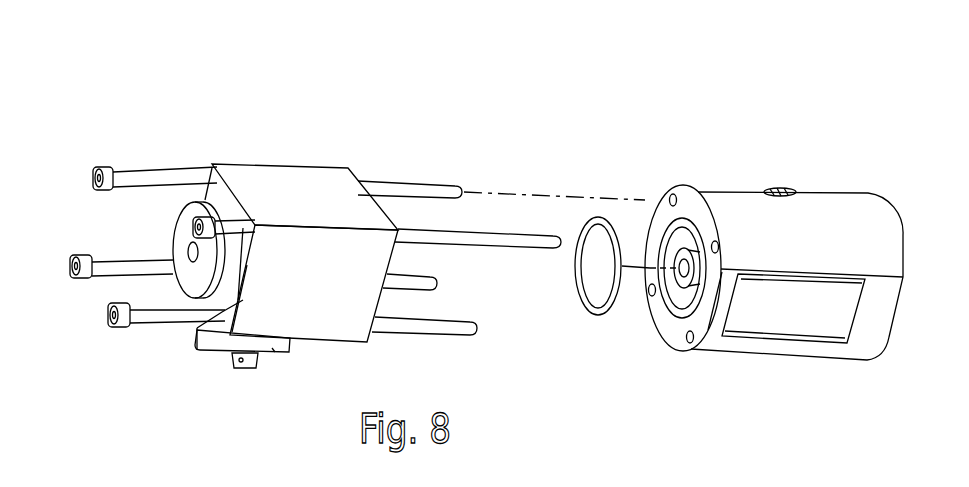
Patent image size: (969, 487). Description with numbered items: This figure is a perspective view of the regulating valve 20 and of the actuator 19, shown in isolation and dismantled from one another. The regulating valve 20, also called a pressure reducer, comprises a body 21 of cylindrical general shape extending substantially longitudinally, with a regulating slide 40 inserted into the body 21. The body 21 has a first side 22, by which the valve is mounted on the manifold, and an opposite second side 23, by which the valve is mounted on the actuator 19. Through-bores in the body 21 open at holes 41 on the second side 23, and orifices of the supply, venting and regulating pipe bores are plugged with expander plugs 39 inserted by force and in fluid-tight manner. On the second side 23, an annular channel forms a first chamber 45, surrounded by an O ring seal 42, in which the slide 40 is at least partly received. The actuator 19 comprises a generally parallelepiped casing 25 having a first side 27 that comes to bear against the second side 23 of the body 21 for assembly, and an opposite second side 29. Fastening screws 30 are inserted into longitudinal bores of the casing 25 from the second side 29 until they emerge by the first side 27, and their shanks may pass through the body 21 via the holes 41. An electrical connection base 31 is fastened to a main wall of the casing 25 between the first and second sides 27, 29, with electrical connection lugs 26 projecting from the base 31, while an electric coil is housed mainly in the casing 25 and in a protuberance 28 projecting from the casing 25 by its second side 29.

The actuator 19 is at (283, 165).
The regulating valve 20 is at (752, 98).
The body 21 is at (794, 245).
The first side 22 is at (813, 237).
The second side 23 is at (679, 267).
The casing 25 is at (328, 295).
The electrical connection lugs 26 is at (233, 360).
The first side 27 is at (370, 342).
The protuberance 28 is at (180, 240).
The second side 29 is at (193, 330).
The fastening screws 30 is at (134, 168).
The electrical connection base 31 is at (272, 348).
The expander plugs 39 is at (780, 190).
The regulating slide 40 is at (688, 240).
The holes 41 is at (673, 198).
The O ring seal 42 is at (598, 318).
The first chamber 45 is at (676, 243).